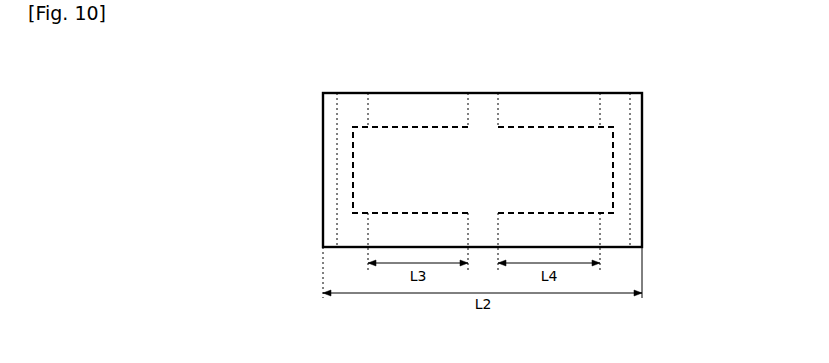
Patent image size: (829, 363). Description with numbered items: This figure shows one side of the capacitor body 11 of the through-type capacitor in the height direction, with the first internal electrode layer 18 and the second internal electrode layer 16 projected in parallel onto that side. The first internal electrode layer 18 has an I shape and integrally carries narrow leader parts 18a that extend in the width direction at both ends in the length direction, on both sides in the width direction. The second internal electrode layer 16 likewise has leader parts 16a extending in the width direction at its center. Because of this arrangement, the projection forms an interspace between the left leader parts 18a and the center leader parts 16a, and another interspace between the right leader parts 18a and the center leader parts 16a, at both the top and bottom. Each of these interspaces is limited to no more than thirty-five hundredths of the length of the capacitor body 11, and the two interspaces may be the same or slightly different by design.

The capacitor body 11 is at (398, 93).
The second internal electrode layer 16 is at (555, 163).
The leader parts of second internal electrode layer 16a is at (487, 105).
The first internal electrode layer 18 is at (620, 160).
The leader parts of first internal electrode layer 18a is at (350, 104).